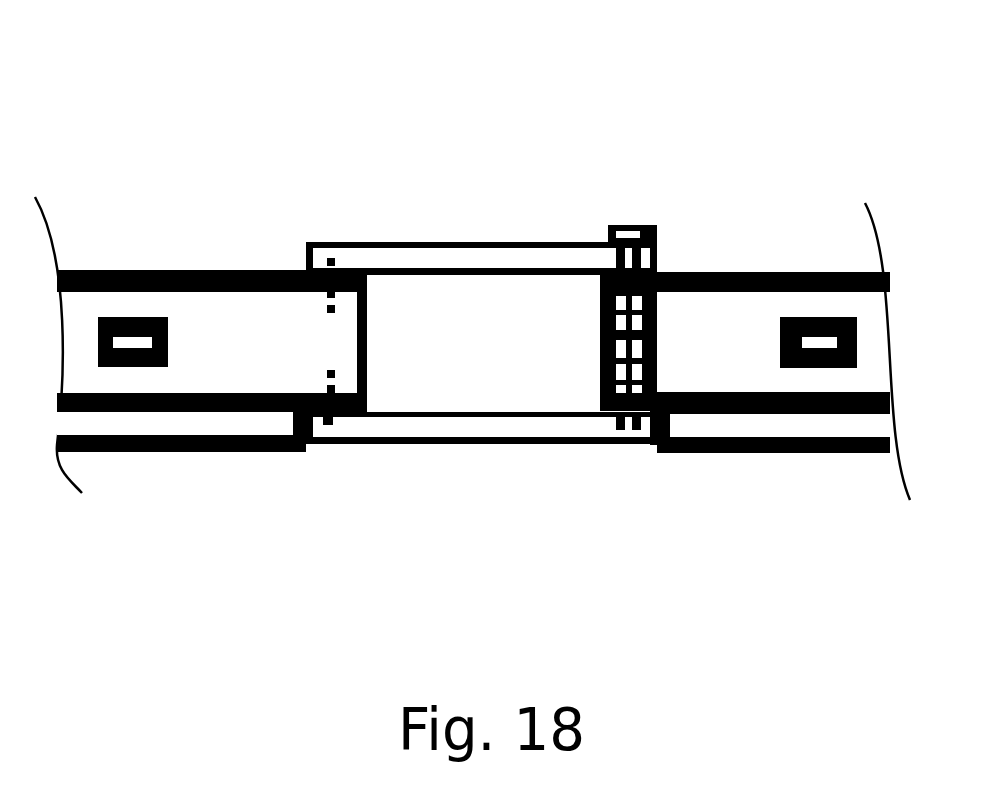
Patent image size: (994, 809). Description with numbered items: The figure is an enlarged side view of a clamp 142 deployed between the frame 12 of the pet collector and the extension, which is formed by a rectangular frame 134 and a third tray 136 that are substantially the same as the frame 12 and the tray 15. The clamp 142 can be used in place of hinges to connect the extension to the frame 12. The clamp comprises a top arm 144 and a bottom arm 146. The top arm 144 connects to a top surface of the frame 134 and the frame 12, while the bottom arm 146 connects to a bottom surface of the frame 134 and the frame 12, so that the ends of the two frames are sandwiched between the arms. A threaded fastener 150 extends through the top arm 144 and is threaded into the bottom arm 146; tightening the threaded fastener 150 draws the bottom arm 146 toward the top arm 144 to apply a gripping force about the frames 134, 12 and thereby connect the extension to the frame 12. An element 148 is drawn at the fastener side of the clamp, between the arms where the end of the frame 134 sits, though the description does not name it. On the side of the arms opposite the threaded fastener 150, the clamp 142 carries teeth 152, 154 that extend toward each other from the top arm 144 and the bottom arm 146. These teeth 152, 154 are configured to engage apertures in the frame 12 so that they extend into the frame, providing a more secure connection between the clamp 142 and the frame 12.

The frame 12 is at (80, 305).
The tray 15 is at (75, 423).
The rectangular frame 134 is at (868, 308).
The third tray 136 is at (858, 424).
The clamp 142 is at (476, 90).
The top arm 144 is at (360, 257).
The bottom arm 146 is at (372, 425).
The seal 148 is at (652, 320).
The threaded fastener 150 is at (636, 224).
The tooth 152 is at (327, 308).
The tooth 154 is at (327, 373).